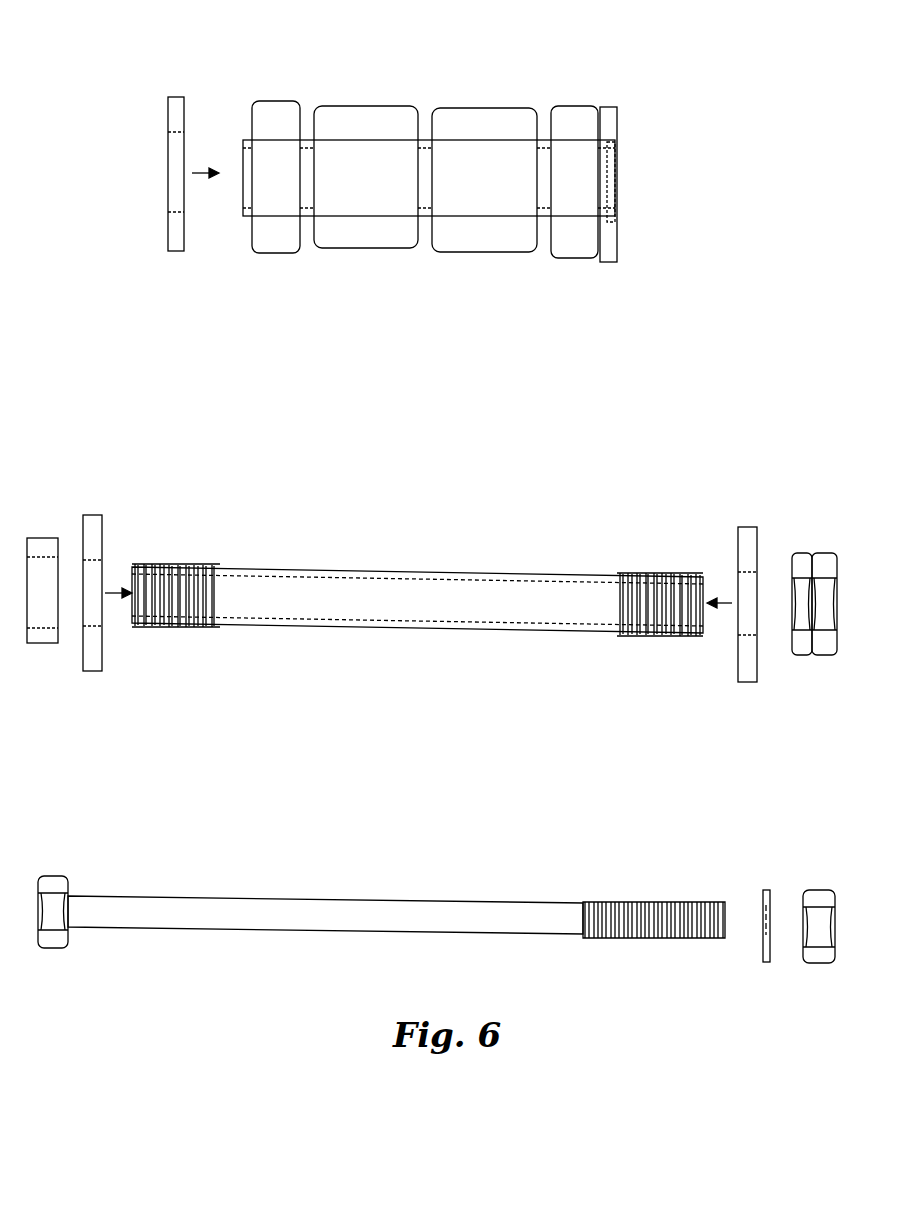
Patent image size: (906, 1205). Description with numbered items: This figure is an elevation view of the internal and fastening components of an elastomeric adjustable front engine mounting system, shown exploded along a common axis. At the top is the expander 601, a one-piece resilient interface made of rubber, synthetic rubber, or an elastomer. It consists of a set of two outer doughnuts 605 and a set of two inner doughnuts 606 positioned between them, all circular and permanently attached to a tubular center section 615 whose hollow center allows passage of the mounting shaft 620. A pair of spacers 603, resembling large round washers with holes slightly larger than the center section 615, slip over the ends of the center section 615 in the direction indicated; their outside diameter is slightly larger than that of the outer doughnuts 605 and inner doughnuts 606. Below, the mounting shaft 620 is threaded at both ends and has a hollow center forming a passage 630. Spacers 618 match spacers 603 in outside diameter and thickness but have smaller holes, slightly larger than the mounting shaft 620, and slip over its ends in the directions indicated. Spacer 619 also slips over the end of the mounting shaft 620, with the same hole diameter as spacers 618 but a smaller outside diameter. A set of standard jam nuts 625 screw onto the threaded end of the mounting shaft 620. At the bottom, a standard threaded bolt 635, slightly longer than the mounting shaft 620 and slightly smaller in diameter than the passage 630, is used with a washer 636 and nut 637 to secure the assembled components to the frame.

The expander 601 is at (428, 93).
The spacers 603 is at (176, 97).
The outer doughnuts 605 is at (578, 110).
The inner doughnuts 606 is at (365, 248).
The center section 615 is at (312, 140).
The spacers 618 is at (103, 541).
The spacer 619 is at (40, 538).
The mounting shaft 620 is at (424, 573).
The jam nuts 625 is at (812, 549).
The passage 630 is at (525, 599).
The threaded bolt 635 is at (250, 896).
The washer 636 is at (763, 900).
The nut 637 is at (825, 890).